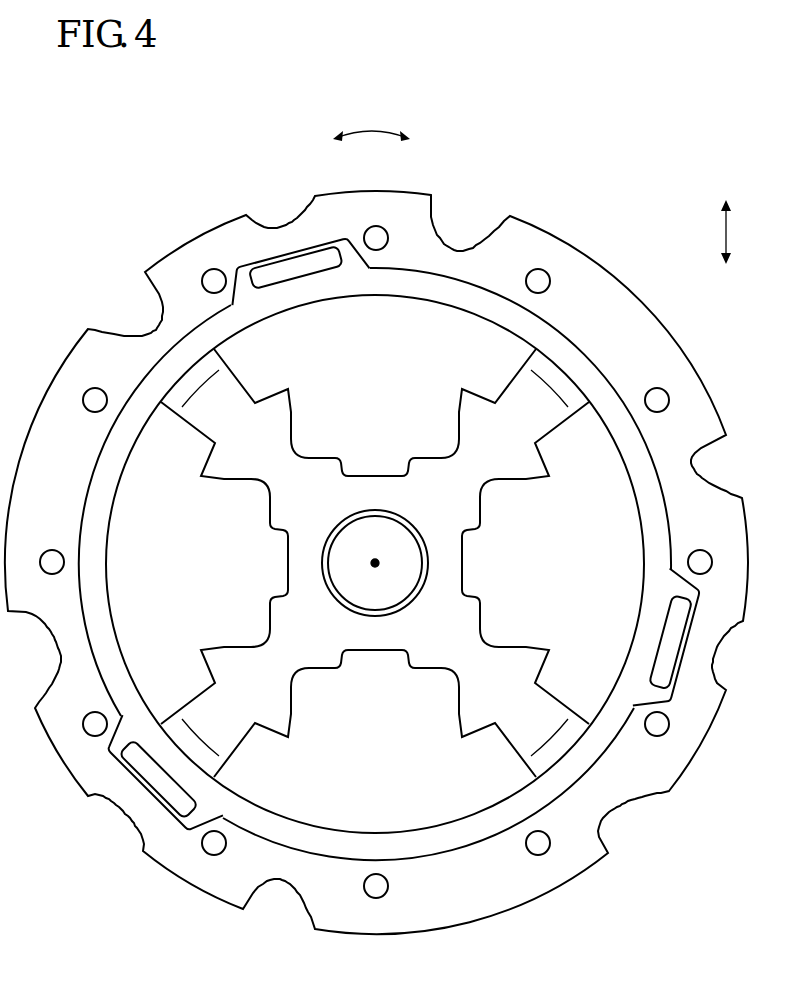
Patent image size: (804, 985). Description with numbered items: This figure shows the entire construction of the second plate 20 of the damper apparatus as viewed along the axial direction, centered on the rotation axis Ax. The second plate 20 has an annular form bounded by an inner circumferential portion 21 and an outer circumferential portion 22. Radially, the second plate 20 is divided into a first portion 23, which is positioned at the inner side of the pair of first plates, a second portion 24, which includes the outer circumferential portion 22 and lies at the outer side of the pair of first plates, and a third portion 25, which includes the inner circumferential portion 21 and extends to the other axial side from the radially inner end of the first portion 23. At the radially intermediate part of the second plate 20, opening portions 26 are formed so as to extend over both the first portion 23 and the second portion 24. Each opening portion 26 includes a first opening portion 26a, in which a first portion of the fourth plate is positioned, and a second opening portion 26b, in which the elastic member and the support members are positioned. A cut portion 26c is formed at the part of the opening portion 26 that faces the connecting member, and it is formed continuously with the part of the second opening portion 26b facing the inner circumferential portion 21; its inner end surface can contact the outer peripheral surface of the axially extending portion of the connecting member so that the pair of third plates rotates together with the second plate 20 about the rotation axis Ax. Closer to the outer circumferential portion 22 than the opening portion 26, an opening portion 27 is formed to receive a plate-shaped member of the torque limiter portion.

The second plate 20 is at (156, 150).
The inner circumferential portion 21 is at (334, 553).
The outer circumferential portion 22 is at (556, 233).
The first portion 23 is at (543, 397).
The second portion 24 is at (620, 312).
The third portion 25 is at (372, 510).
The opening portion 26 is at (485, 507).
The first opening portion 26a is at (512, 383).
The second opening portion 26b is at (458, 447).
The cut portion 26c is at (402, 447).
The opening portion 27 is at (327, 262).
The rotation axis Ax is at (375, 567).